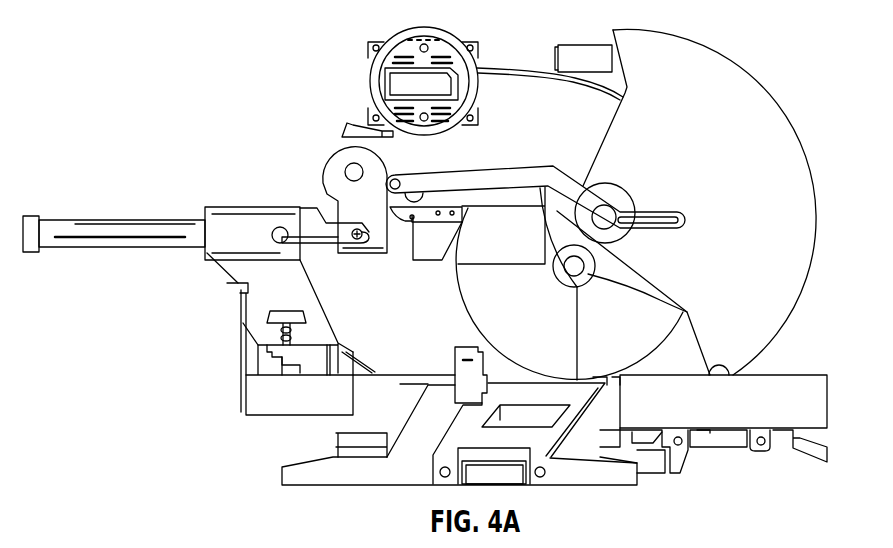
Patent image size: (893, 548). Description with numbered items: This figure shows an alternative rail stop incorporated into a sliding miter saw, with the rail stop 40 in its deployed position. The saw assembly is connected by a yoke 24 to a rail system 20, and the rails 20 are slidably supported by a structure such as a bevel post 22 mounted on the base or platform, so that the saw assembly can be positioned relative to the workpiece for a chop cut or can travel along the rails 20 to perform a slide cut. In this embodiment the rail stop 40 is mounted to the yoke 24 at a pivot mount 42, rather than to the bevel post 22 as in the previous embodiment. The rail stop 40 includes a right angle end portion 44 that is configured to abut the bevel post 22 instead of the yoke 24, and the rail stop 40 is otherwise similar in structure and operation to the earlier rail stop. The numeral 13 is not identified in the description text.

The blade guard 13 is at (653, 308).
The rail system 20 is at (116, 231).
The bevel post 22 is at (231, 285).
The yoke 24 is at (337, 161).
The rail stop 40 is at (307, 212).
The pivot mount 42 is at (367, 238).
The right angle end portion 44 is at (305, 222).